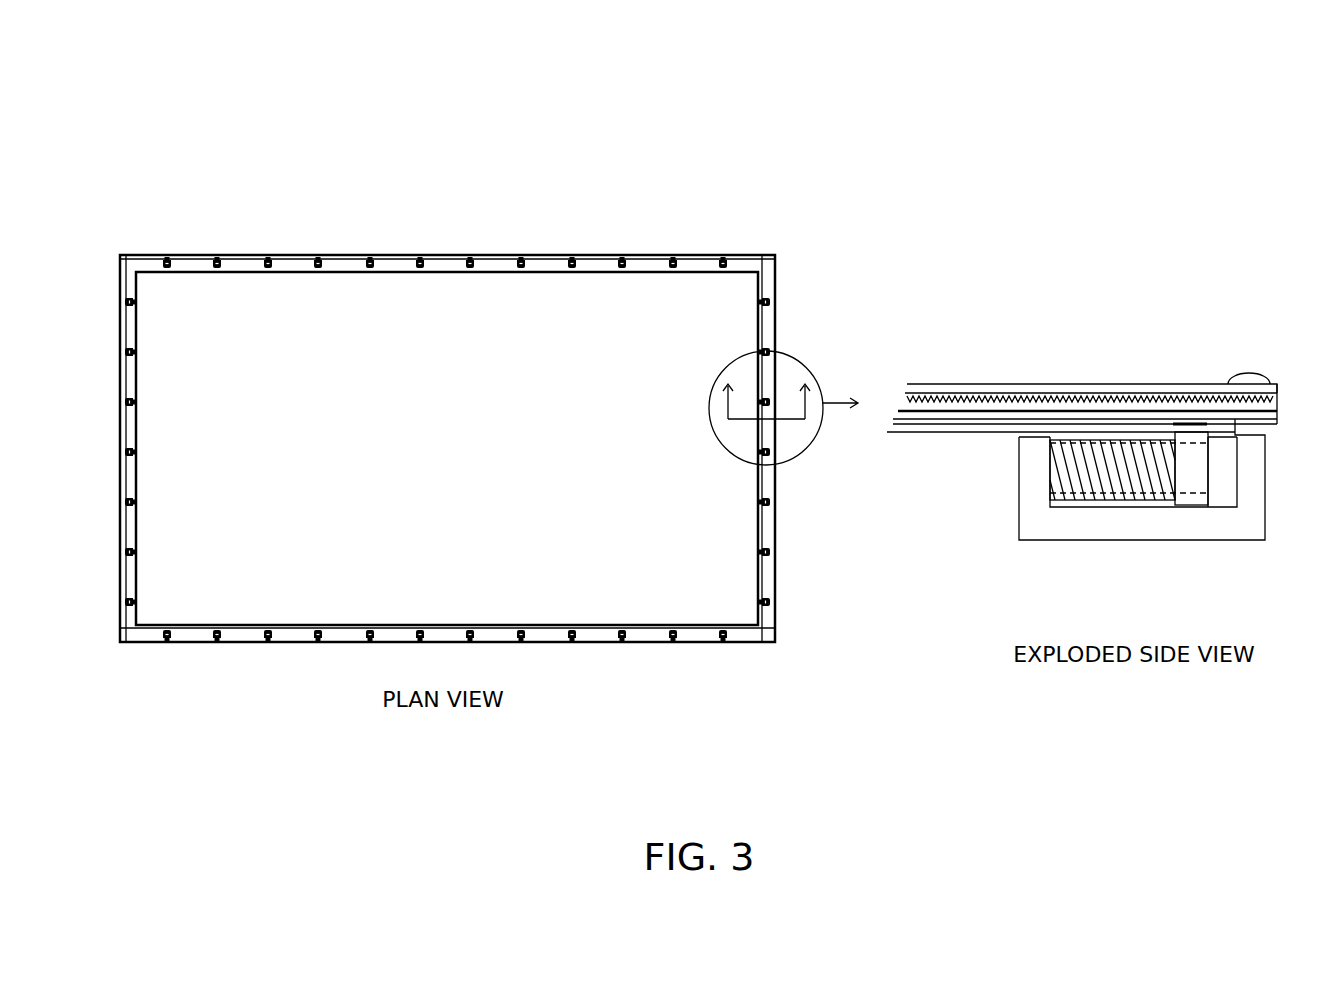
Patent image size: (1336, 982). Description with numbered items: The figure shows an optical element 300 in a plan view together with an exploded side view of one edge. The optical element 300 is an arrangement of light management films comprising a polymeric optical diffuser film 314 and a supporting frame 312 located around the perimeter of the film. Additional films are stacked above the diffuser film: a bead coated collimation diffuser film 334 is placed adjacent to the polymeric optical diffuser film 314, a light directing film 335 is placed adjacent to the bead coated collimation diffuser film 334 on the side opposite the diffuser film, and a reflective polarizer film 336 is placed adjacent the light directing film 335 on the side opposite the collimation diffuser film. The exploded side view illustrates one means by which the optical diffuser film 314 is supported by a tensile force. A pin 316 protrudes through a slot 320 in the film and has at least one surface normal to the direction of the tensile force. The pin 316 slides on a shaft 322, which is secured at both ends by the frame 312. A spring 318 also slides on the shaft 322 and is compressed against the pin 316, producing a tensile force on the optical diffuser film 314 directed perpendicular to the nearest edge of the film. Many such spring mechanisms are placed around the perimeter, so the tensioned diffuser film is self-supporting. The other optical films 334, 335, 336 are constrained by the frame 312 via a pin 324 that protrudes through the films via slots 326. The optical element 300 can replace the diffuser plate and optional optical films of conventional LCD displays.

The optical element 300 is at (577, 108).
The supporting frame 312 is at (1030, 523).
The polymeric optical diffuser film 314 is at (966, 430).
The pin 316 is at (1192, 460).
The spring 318 is at (1073, 482).
The slot 320 is at (1173, 432).
The shaft 322 is at (1225, 482).
The pin 324 is at (1248, 375).
The slots 326 is at (1270, 385).
The bead coated collimation diffuser film 334 is at (987, 420).
The light directing film 335 is at (1017, 398).
The reflective polarizer film 336 is at (1042, 387).